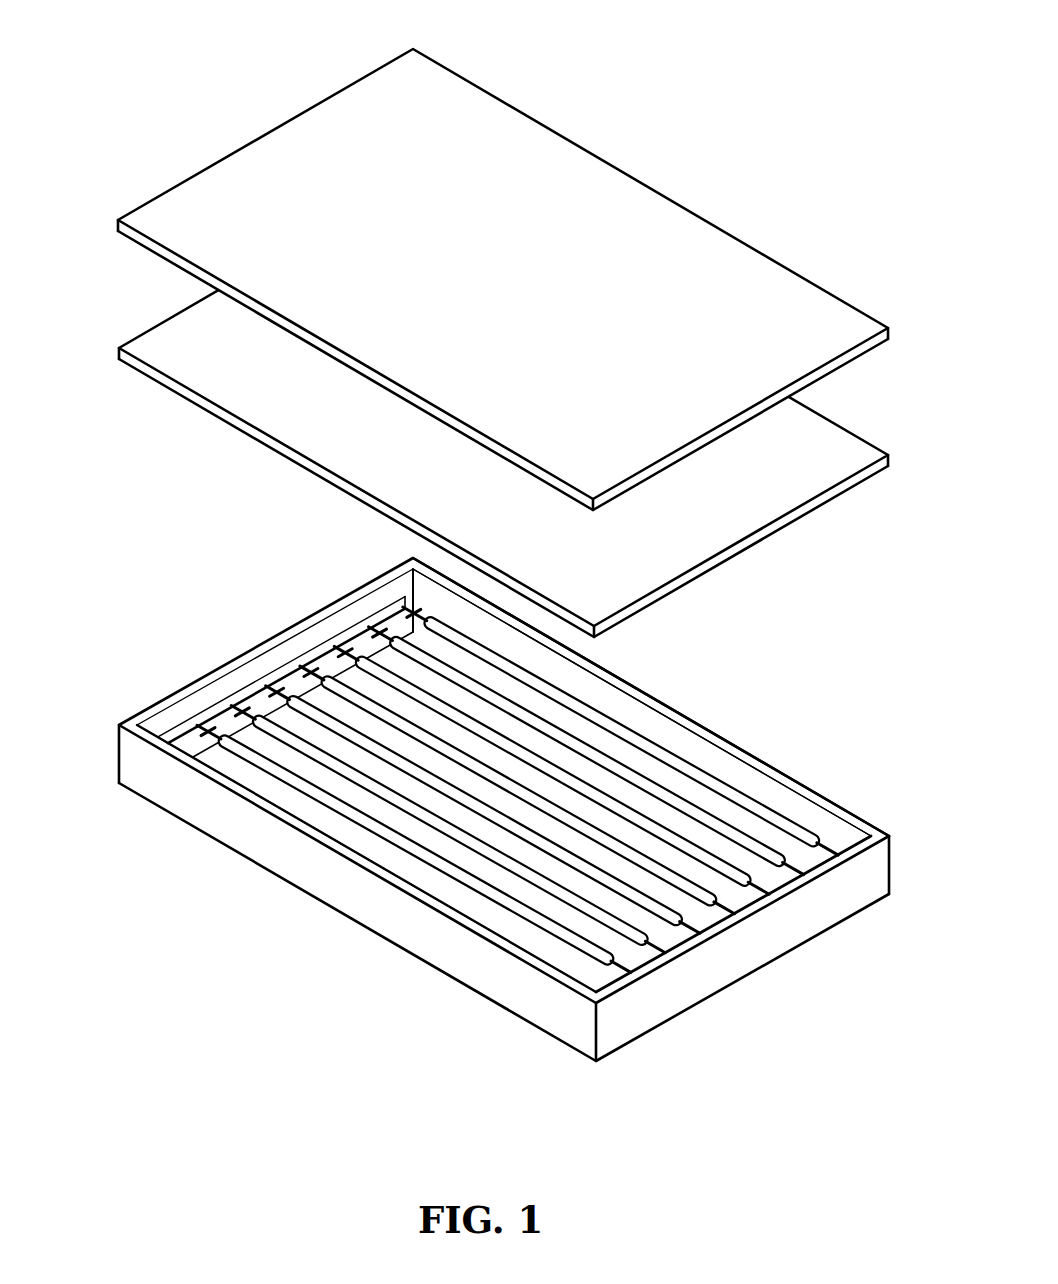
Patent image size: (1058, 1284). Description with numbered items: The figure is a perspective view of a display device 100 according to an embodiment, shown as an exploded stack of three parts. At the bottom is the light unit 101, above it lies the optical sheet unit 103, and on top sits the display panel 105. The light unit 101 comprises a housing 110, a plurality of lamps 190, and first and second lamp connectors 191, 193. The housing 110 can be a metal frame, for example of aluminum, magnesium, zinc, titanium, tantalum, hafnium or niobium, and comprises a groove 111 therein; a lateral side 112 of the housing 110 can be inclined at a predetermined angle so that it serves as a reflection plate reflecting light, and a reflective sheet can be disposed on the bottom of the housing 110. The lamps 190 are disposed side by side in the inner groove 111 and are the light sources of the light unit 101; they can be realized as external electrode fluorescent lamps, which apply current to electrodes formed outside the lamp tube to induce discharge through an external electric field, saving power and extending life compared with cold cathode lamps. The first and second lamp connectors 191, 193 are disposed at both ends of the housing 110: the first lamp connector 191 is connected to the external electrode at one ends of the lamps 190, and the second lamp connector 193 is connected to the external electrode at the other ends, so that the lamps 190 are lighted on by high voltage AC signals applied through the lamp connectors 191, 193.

The display device 100 is at (88, 33).
The light unit 101 is at (238, 625).
The optical sheet unit 103 is at (172, 329).
The display panel 105 is at (250, 152).
The housing 110 is at (205, 798).
The groove 111 is at (323, 778).
The lateral side 112 is at (810, 818).
The lamps 190 is at (762, 863).
The first lamp connector 191 is at (198, 702).
The second lamp connector 193 is at (703, 928).